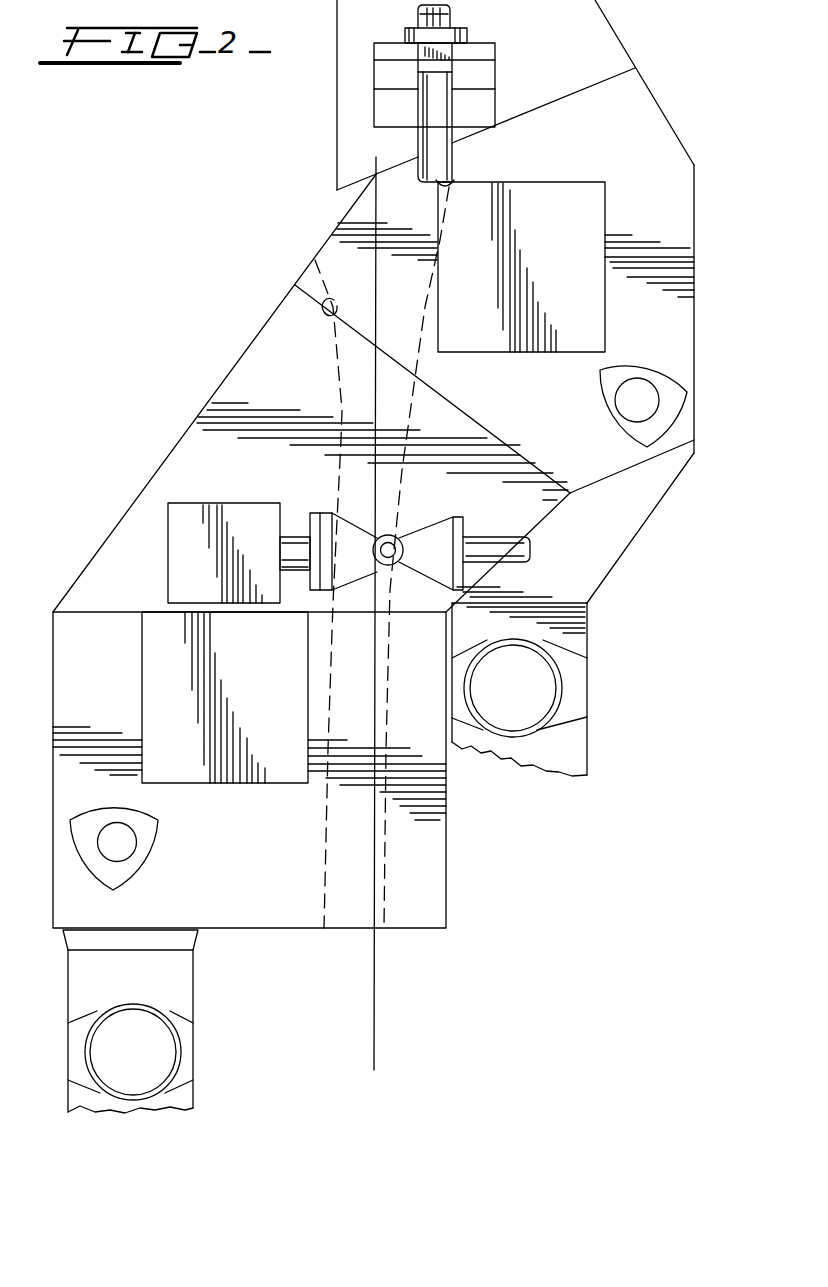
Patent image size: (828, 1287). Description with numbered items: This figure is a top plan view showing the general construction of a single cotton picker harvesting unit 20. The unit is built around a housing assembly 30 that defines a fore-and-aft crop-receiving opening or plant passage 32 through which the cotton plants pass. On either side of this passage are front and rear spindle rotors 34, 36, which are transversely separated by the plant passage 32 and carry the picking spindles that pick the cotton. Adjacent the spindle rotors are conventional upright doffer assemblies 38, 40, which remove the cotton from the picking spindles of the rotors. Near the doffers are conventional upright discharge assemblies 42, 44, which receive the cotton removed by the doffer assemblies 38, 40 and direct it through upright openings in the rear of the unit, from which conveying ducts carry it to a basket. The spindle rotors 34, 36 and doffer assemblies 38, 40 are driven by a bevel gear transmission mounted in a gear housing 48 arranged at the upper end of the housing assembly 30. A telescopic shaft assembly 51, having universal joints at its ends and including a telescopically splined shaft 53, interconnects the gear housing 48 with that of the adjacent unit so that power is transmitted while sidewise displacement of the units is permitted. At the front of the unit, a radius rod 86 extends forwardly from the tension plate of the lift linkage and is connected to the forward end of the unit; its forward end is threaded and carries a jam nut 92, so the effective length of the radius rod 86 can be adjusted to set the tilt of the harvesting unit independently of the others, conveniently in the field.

The cotton picker harvesting unit 20 is at (653, 77).
The housing assembly 30 is at (197, 418).
The plant passage 32 is at (330, 318).
The front spindle rotor 34 is at (614, 218).
The rear spindle rotor 36 is at (136, 682).
The doffer assembly 38 is at (678, 343).
The doffer assembly 40 is at (137, 882).
The discharge assembly 42 is at (586, 636).
The discharge assembly 44 is at (201, 1005).
The gear housing 48 is at (203, 571).
The telescopic shaft assembly 51 is at (434, 521).
The telescopically splined shaft 53 is at (522, 558).
The radius rod 86 is at (440, 160).
The jam nut 92 is at (466, 36).